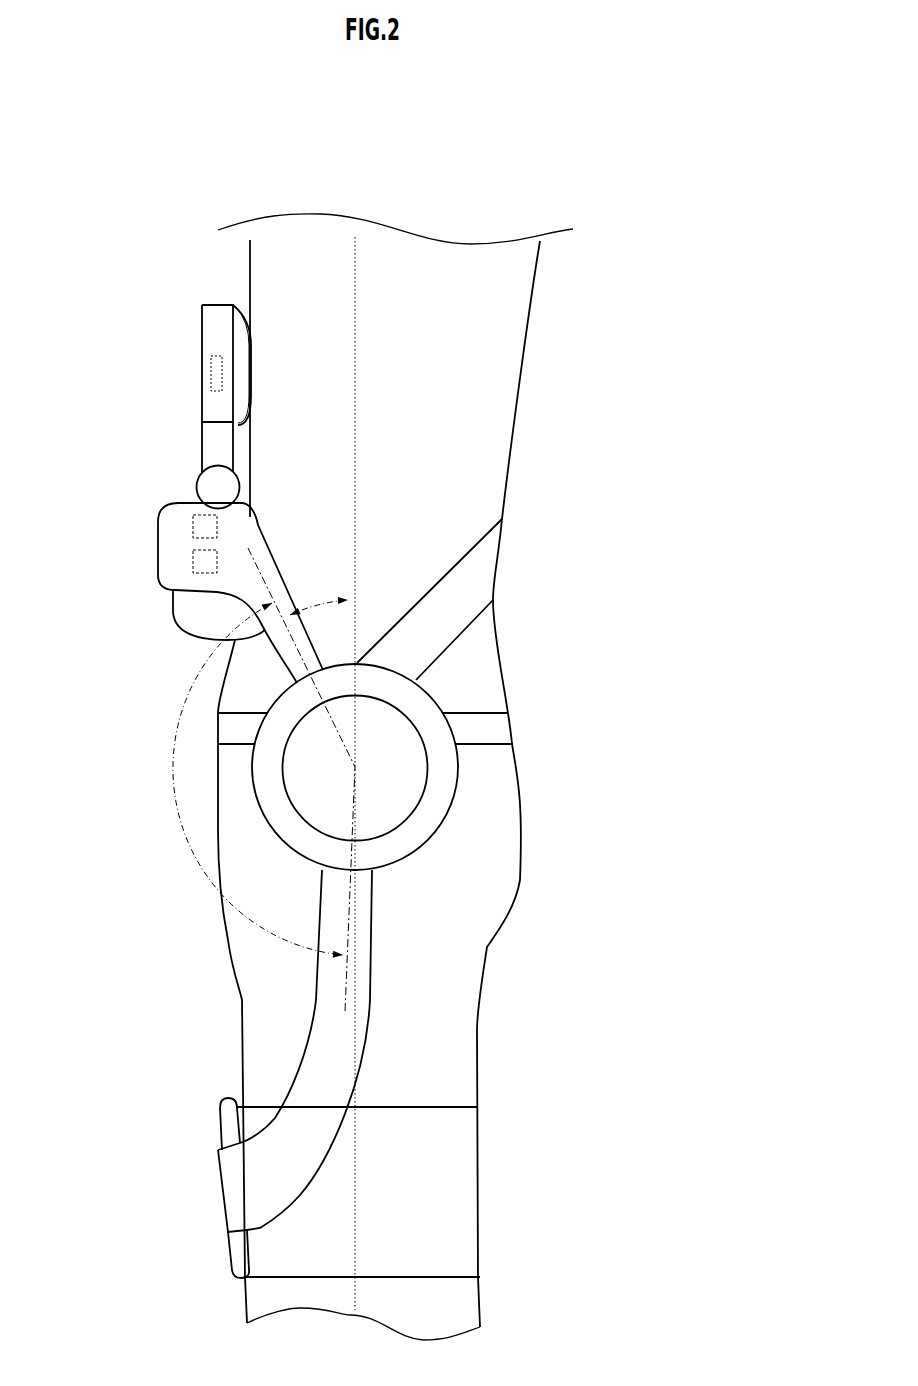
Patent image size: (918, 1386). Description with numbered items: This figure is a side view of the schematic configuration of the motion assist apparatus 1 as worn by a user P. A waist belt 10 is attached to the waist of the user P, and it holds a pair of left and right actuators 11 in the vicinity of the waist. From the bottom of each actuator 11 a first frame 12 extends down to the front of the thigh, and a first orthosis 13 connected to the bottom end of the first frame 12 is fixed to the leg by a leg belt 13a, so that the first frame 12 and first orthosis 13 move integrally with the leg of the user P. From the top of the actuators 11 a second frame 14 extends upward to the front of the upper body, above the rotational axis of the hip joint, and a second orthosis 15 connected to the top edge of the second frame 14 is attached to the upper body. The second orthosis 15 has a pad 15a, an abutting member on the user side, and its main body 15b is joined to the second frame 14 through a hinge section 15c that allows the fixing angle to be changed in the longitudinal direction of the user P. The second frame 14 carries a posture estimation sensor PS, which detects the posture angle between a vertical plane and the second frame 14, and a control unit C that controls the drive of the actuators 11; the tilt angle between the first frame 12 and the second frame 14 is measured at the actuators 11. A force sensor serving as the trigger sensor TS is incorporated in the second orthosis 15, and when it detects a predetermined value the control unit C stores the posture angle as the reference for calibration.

The motion assist apparatus 1 is at (118, 303).
The waist belt 10 is at (497, 567).
The actuator 11 is at (431, 694).
The first frame 12 is at (318, 995).
The first orthosis 13 is at (218, 1125).
The leg belt 13a is at (480, 1170).
The second frame 14 is at (158, 538).
The second orthosis 15 is at (155, 388).
The pad 15a is at (242, 392).
The main body 15b is at (223, 310).
The hinge section 15c is at (213, 485).
The trigger sensor TS is at (213, 356).
The posture estimation sensor PS is at (177, 507).
The control unit C is at (193, 568).
The user P is at (602, 363).